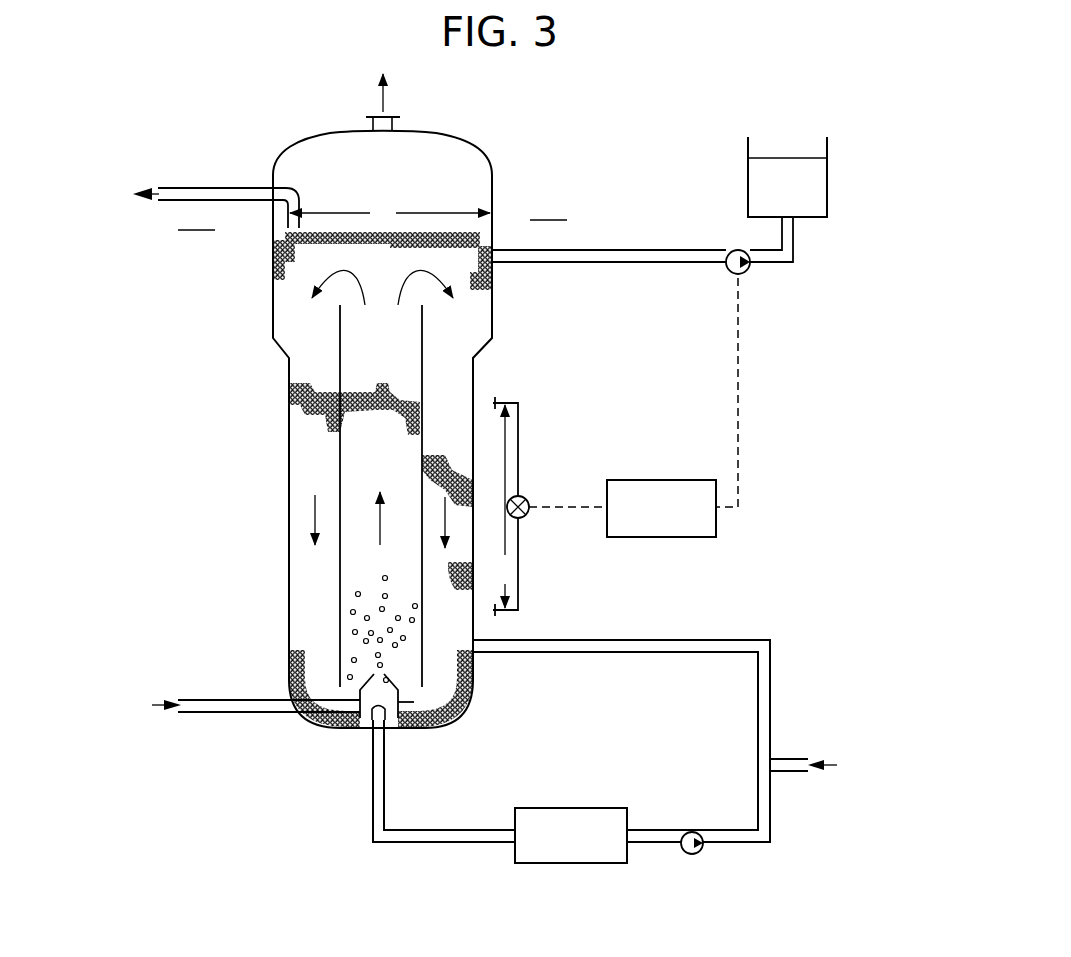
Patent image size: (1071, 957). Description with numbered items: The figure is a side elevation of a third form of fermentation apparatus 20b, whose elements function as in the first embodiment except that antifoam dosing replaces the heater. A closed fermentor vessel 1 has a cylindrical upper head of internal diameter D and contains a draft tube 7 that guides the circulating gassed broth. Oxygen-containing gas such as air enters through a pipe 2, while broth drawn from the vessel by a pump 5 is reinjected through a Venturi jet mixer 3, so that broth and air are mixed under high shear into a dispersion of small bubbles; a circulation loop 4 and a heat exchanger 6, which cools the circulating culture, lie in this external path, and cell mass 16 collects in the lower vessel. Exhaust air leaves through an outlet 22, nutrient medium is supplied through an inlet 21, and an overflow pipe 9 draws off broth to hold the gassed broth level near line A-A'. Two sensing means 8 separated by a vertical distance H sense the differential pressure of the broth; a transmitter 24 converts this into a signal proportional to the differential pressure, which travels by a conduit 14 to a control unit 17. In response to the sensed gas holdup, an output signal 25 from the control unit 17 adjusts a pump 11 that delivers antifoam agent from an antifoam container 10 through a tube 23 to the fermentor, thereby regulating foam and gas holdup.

The fermentor vessel 1 is at (289, 512).
The pipe 2 is at (220, 718).
The Venturi jet mixer 3 is at (370, 722).
The circulation pipe loop 4 is at (680, 638).
The pump 5 is at (692, 856).
The heat exchanger 6 is at (570, 866).
The draft tube 7 is at (340, 336).
The sensing means 8 is at (497, 400).
The overflow pipe 9 is at (222, 188).
The antifoam container 10 is at (827, 188).
The pump 11 is at (736, 251).
The conduit 14 is at (569, 510).
The cell mass 16 is at (418, 728).
The control unit 17 is at (662, 480).
The fermentation apparatus 20b is at (490, 168).
The inlet 21 is at (797, 757).
The outlet 22 is at (400, 117).
The tube 23 is at (797, 251).
The transmitter 24 is at (528, 498).
The output signal 25 is at (738, 380).